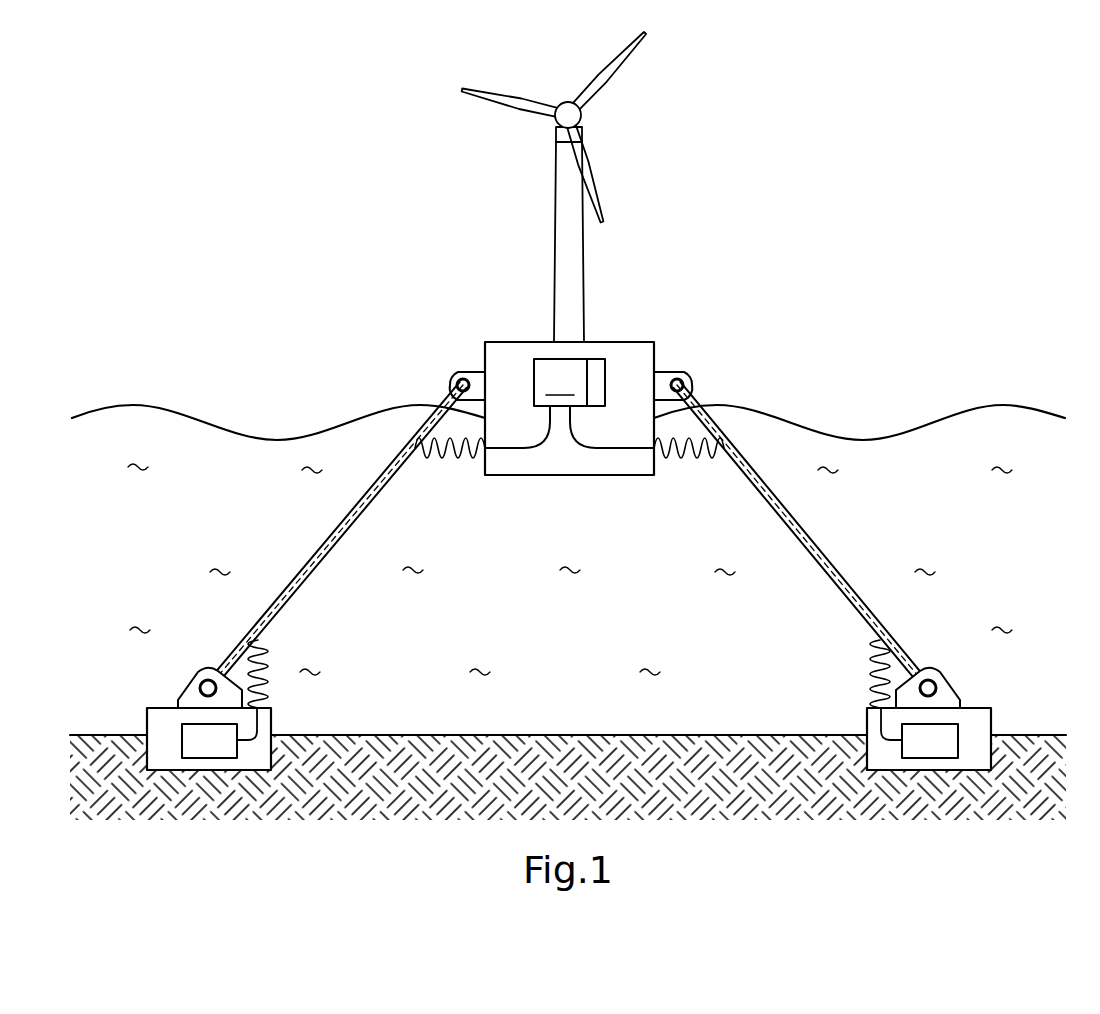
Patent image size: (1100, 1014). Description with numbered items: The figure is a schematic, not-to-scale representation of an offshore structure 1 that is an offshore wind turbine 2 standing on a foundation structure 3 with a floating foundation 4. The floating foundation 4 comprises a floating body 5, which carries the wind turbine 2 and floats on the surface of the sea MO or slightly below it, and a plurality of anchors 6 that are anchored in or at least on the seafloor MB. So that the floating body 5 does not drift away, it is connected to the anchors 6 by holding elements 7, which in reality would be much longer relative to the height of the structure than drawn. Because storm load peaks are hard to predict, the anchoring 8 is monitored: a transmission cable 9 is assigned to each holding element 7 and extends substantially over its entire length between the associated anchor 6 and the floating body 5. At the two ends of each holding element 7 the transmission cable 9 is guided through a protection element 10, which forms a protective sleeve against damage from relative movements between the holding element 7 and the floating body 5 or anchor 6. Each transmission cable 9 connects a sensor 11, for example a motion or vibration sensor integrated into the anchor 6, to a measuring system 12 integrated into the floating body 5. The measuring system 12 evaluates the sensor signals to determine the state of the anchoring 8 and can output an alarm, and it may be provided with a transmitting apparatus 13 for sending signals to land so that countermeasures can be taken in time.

The offshore structure 1 is at (569, 401).
The offshore wind turbine 2 is at (646, 112).
The foundation structure 3 is at (595, 398).
The floating foundation 4 is at (350, 390).
The floating body 5 is at (503, 352).
The anchor 6 is at (569, 712).
The holding element 7 is at (333, 532).
The anchoring 8 is at (1030, 534).
The transmission cable 9 is at (510, 450).
The protection element 10 is at (452, 462).
The sensor 11 is at (187, 742).
The measuring system 12 is at (559, 381).
The transmitting apparatus 13 is at (593, 363).
The surface of the sea MO is at (1007, 405).
The seafloor MB is at (545, 735).